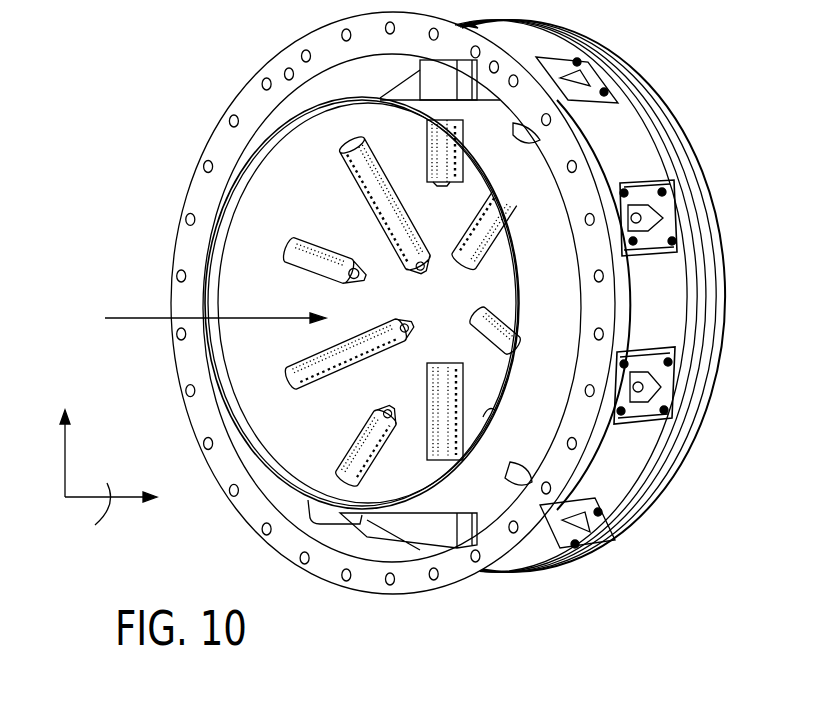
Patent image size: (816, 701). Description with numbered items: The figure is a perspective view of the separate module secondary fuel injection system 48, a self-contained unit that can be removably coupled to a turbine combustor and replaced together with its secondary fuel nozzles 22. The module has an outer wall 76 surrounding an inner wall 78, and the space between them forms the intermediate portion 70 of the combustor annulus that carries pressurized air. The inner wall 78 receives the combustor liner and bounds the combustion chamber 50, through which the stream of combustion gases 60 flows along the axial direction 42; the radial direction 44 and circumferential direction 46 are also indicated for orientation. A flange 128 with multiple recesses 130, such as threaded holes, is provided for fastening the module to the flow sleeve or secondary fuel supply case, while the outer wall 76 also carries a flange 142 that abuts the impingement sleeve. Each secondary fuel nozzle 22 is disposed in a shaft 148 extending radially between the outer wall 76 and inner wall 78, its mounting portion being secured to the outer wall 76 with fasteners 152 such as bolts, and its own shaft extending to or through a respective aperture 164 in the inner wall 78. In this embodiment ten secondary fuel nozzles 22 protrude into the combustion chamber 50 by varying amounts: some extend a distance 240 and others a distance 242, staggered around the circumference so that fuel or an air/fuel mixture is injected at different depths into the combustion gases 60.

The secondary fuel nozzle 22 is at (442, 363).
The axial direction 42 is at (84, 498).
The radial direction 44 is at (63, 458).
The circumferential direction 46 is at (88, 466).
The separate module secondary fuel injection system 48 is at (134, 31).
The combustion chamber 50 is at (378, 318).
The stream of combustion gases 60 is at (127, 321).
The intermediate portion 70 is at (523, 432).
The outer wall 76 is at (634, 165).
The inner wall 78 is at (247, 267).
The flange 128 is at (248, 102).
The recesses 130 is at (186, 218).
The flange 142 is at (703, 378).
The shaft 148 is at (427, 530).
The fasteners 152 is at (663, 191).
The aperture 164 is at (365, 242).
The distance 240 is at (338, 290).
The distance 242 is at (396, 272).